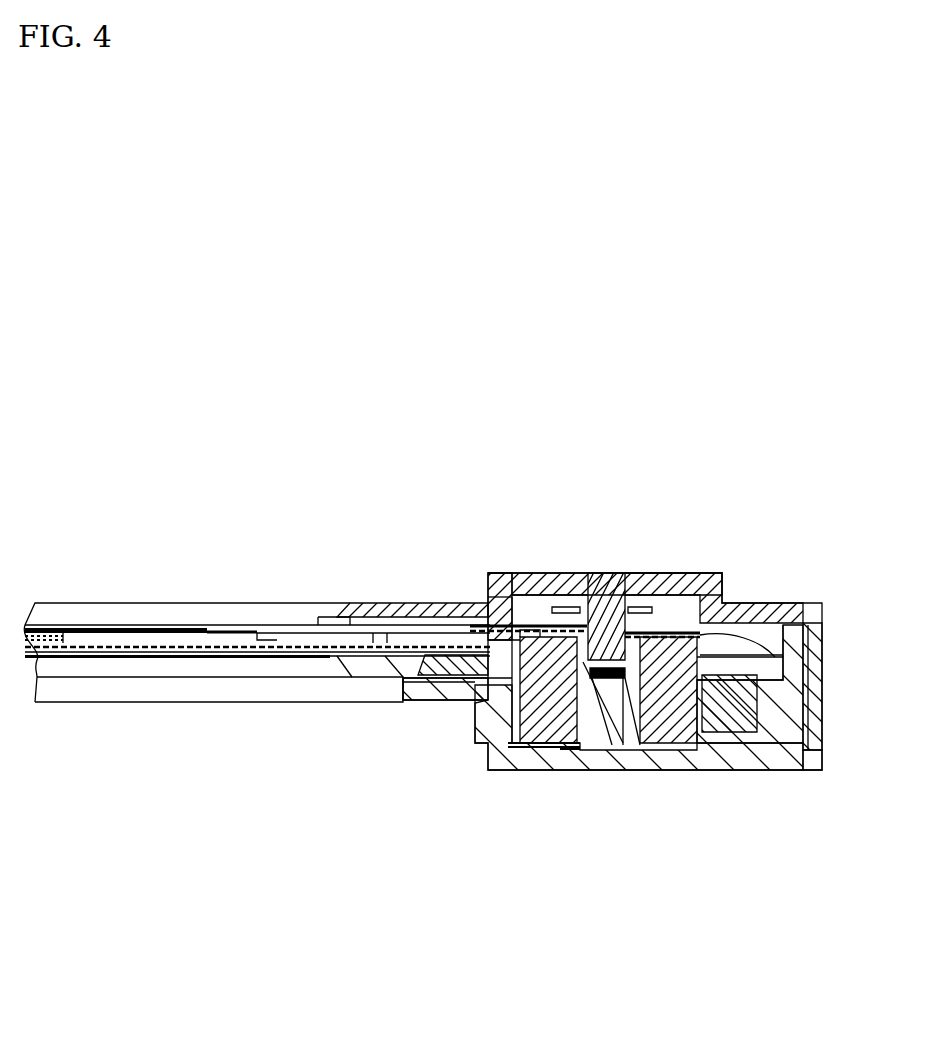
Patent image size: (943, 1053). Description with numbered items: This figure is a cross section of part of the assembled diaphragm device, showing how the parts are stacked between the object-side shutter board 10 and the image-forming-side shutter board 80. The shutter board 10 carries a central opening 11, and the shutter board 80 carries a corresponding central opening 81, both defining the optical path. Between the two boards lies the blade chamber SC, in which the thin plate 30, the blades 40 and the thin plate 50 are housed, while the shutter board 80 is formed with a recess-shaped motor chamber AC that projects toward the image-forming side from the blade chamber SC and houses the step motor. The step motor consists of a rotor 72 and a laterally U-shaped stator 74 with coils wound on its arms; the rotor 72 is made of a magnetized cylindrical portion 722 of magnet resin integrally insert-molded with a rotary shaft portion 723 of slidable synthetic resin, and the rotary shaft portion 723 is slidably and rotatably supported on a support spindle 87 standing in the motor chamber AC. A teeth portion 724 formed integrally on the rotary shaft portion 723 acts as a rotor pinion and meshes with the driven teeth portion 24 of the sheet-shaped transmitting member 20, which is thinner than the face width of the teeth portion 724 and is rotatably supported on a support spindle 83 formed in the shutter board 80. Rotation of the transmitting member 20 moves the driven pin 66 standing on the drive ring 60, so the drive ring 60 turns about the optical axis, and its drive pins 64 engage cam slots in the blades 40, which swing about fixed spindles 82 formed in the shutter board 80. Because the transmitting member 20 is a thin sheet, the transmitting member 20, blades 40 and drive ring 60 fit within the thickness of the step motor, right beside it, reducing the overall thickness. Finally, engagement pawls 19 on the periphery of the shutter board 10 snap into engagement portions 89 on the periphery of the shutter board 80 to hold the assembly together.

The opening 11 is at (115, 605).
The blade chamber SC is at (170, 640).
The fixed spindle 82 is at (270, 638).
The thin plate 30 is at (320, 640).
The driven pin 66 is at (404, 616).
The support spindle 83 is at (490, 598).
The transmitting member 20 is at (520, 645).
The driven teeth portion 24 is at (568, 625).
The teeth portion 724 is at (578, 595).
The rotary shaft portion 723 is at (610, 575).
The shutter board 10 is at (726, 566).
The motor chamber AC is at (773, 635).
The engagement pawl 19 is at (818, 650).
The blade 40 is at (63, 702).
The thin plate 50 is at (250, 702).
The opening 81 is at (310, 702).
The drive pin 64 is at (365, 705).
The drive ring 60 is at (438, 705).
The cylindrical portion 722 is at (530, 745).
The rotor 72 is at (546, 770).
The support spindle 87 is at (605, 745).
The stator 74 is at (728, 770).
The shutter board 80 is at (790, 784).
The engagement portion 89 is at (820, 762).